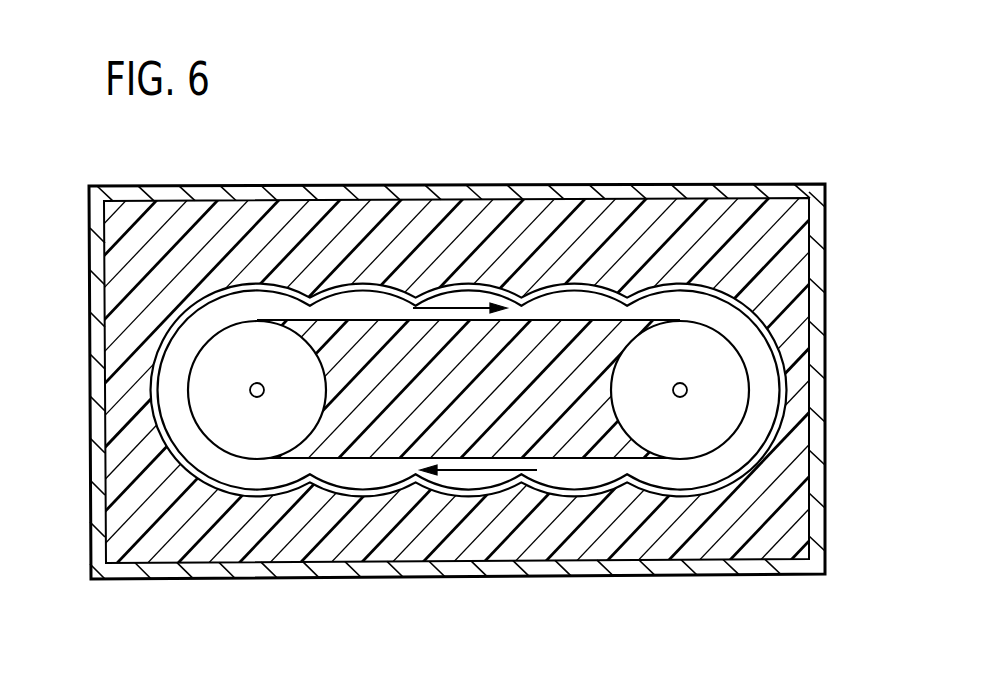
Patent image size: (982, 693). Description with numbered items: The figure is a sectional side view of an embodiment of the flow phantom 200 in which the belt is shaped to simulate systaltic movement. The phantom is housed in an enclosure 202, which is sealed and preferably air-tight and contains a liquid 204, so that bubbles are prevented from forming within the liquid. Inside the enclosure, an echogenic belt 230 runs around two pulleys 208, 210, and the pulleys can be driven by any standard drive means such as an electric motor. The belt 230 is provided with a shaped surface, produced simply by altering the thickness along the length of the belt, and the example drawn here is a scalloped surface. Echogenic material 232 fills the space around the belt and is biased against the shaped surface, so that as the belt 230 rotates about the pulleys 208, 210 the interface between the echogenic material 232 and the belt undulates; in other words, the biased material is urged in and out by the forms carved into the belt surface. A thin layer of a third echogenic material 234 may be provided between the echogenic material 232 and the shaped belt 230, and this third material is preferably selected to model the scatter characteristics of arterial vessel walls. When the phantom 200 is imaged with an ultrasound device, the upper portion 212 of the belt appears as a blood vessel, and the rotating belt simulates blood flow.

The flow phantom 200 is at (725, 173).
The enclosure 202 is at (737, 568).
The liquid 204 is at (190, 207).
The pulley 208 is at (202, 402).
The pulley 210 is at (727, 358).
The upper portion of belt 212 is at (577, 297).
The echogenic belt 230 is at (173, 360).
The echogenic material 232 is at (132, 523).
The third echogenic material 234 is at (442, 492).